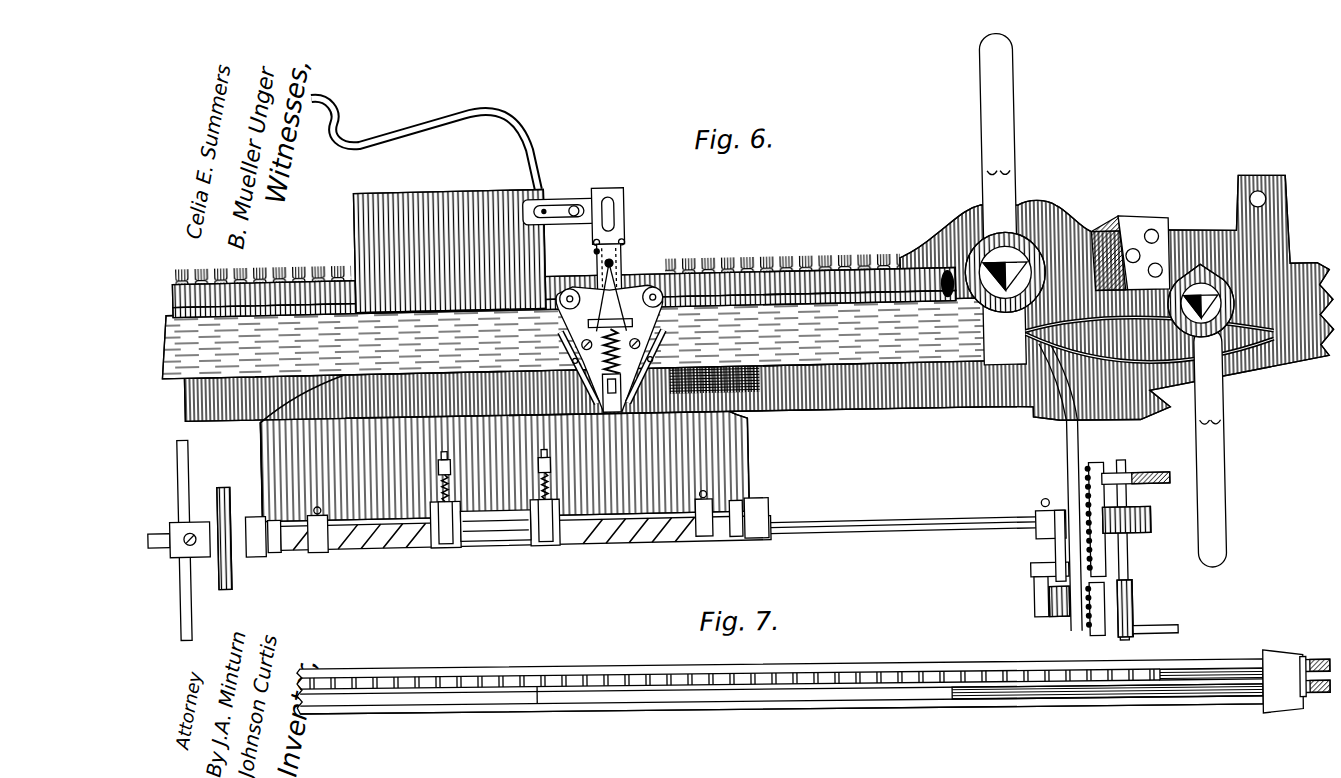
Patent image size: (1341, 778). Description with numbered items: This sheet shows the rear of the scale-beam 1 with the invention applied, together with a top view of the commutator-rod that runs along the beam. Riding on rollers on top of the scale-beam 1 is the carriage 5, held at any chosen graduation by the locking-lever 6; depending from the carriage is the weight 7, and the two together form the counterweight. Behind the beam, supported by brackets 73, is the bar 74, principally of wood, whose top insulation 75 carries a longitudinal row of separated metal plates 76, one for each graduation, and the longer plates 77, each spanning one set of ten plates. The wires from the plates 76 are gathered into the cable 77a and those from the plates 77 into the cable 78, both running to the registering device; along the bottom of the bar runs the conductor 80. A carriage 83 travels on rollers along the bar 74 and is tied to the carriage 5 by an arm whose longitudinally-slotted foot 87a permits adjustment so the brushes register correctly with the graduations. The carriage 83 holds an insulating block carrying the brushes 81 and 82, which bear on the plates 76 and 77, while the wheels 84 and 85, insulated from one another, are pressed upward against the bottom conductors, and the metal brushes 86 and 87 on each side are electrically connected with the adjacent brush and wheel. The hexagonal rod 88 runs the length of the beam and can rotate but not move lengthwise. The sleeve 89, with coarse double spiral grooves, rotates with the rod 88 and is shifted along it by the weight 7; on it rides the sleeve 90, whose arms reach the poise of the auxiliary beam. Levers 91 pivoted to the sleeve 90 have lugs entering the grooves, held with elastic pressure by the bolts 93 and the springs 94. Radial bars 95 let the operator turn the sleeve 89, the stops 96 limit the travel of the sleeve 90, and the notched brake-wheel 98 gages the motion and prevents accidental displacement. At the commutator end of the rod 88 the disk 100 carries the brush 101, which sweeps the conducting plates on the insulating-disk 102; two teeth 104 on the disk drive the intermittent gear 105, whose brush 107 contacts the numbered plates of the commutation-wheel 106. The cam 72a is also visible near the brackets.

In FIG. 6, the scale-beam 1 is at (758, 322).
In FIG. 6, the carriage 5 is at (358, 211).
In FIG. 6, the locking-lever 6 is at (455, 120).
In FIG. 6, the weight 7 is at (748, 464).
In FIG. 6, the cam 72a is at (1106, 301).
In FIG. 6, the brackets 73 is at (1128, 257).
In FIG. 6, the bar 74 is at (580, 338).
In FIG. 7, the bar 74 is at (891, 710).
In FIG. 7, the top insulation 75 is at (1186, 690).
In FIG. 6, the metal plates 76 is at (770, 305).
In FIG. 7, the metal plates 76 is at (450, 672).
In FIG. 7, the plates 77 is at (471, 698).
In FIG. 7, the cable 77a is at (1318, 666).
In FIG. 6, the cable 78 is at (1032, 463).
In FIG. 7, the cable 78 is at (1320, 703).
In FIG. 6, the conductor 80 is at (872, 400).
In FIG. 6, the brush 81 is at (604, 268).
In FIG. 6, the brush 82 is at (640, 262).
In FIG. 6, the carriage 83 is at (598, 246).
In FIG. 6, the wheel 84 is at (590, 396).
In FIG. 6, the wheel 85 is at (640, 418).
In FIG. 6, the metal brush 86 is at (609, 340).
In FIG. 6, the metal brush 87 is at (668, 344).
In FIG. 6, the longitudinally-slotted foot 87a is at (600, 198).
In FIG. 6, the hexagonal rod 88 is at (905, 536).
In FIG. 6, the sleeve 89 is at (655, 545).
In FIG. 6, the sleeve 90 is at (496, 540).
In FIG. 6, the levers 91 is at (540, 500).
In FIG. 6, the bolts 93 is at (447, 463).
In FIG. 6, the springs 94 is at (438, 484).
In FIG. 6, the radial bars 95 is at (187, 431).
In FIG. 6, the stops 96 is at (315, 547).
In FIG. 6, the brake-wheel 98 is at (229, 569).
In FIG. 6, the disk 100 is at (1121, 470).
In FIG. 6, the brush 101 is at (1163, 495).
In FIG. 6, the insulating-disk 102 is at (1094, 472).
In FIG. 6, the teeth 104 is at (1126, 540).
In FIG. 6, the intermittent gear 105 is at (1128, 610).
In FIG. 6, the commutation-wheel 106 is at (1085, 636).
In FIG. 6, the brush 107 is at (1173, 640).